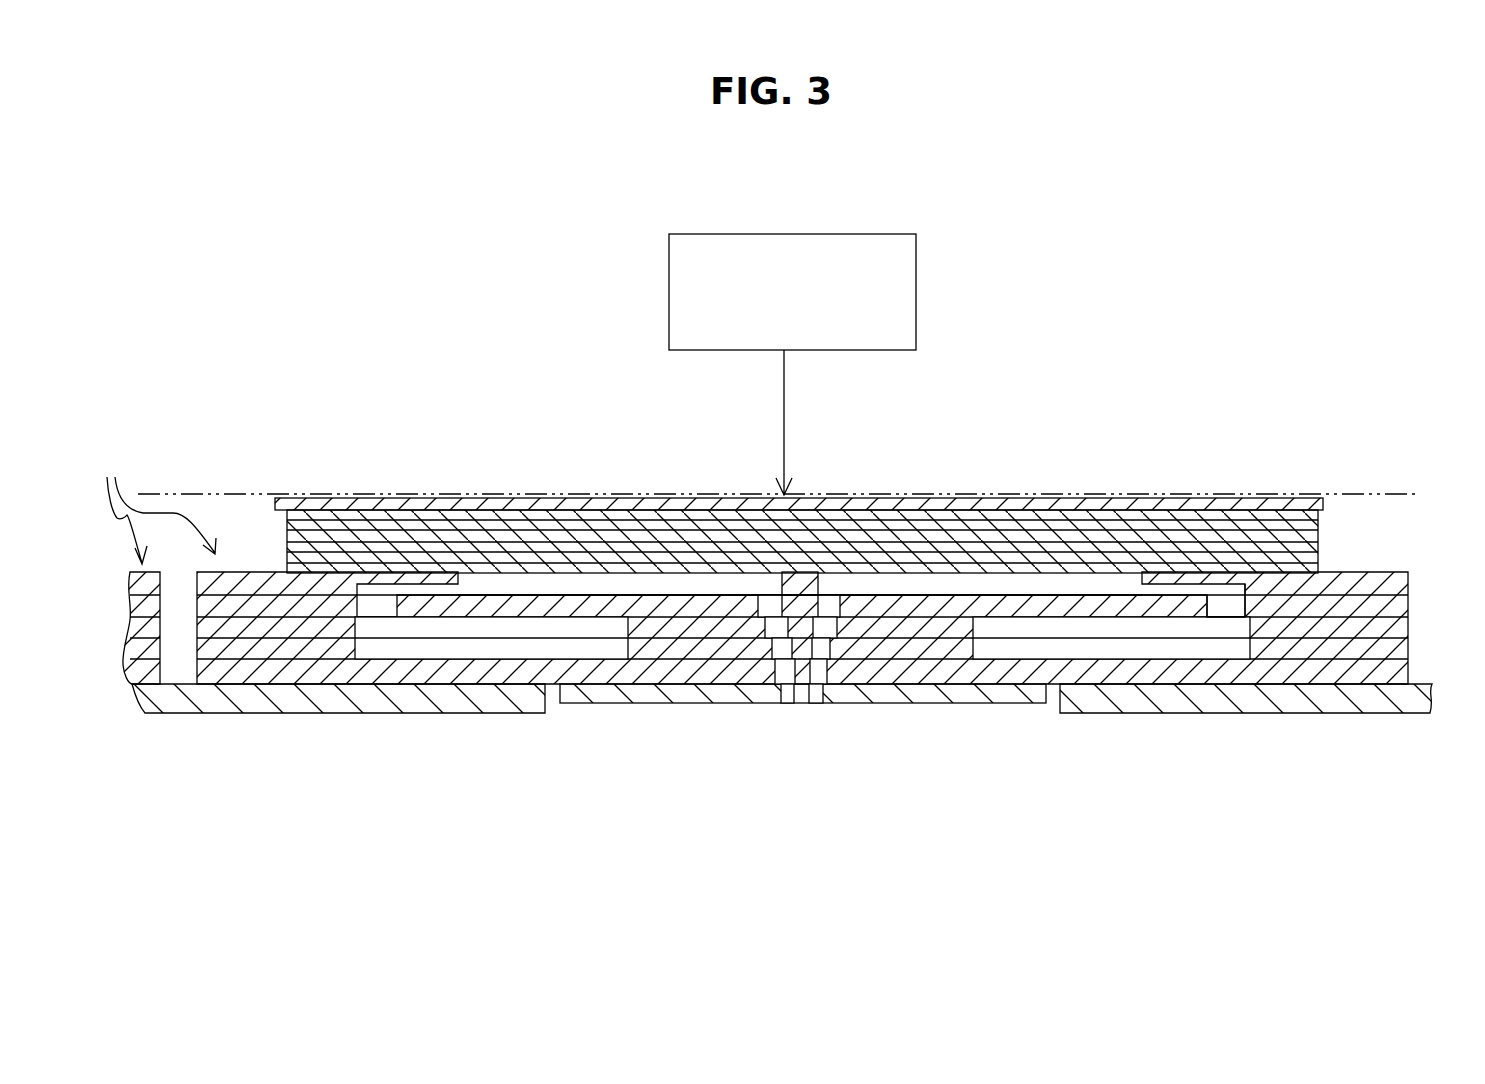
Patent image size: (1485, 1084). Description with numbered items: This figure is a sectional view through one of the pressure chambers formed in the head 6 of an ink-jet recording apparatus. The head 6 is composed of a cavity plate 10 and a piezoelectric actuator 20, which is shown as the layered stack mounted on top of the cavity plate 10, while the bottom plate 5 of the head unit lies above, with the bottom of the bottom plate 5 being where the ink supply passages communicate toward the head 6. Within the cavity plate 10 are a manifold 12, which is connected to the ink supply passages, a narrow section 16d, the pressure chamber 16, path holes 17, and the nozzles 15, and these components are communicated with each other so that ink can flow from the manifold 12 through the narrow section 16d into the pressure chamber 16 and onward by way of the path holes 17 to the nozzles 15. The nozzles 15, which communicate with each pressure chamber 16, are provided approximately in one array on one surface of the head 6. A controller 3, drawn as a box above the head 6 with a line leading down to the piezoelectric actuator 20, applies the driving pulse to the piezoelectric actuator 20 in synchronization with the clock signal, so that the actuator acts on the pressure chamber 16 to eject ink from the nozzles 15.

The controller 3 is at (916, 292).
The bottom plate 5 is at (1338, 494).
The head 6 is at (159, 503).
The cavity plate 10 is at (1420, 572).
The manifold 12 is at (462, 632).
The nozzles 15 is at (815, 703).
The pressure chamber 16 is at (602, 582).
The narrow section 16d is at (1203, 592).
The path holes 17 is at (770, 627).
The piezoelectric actuator 20 is at (1085, 520).